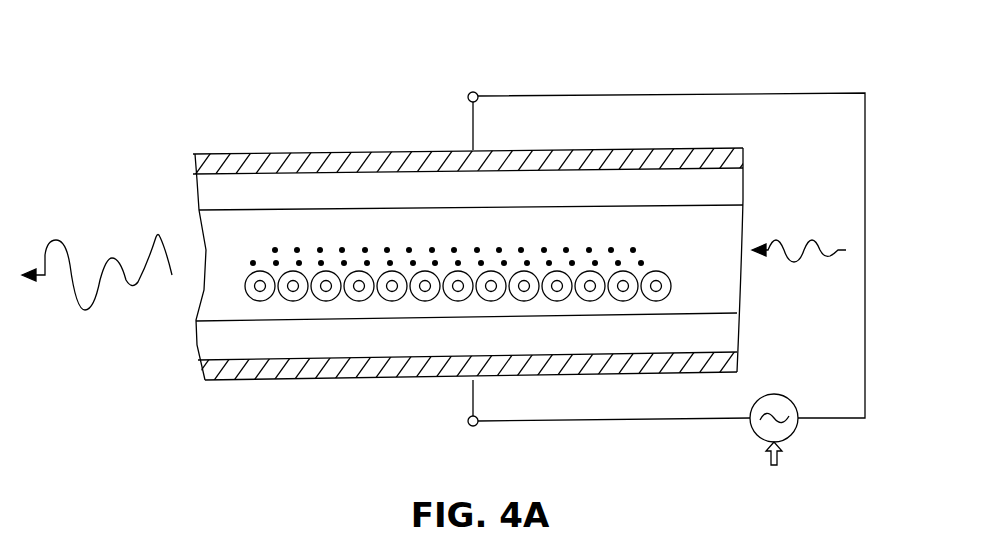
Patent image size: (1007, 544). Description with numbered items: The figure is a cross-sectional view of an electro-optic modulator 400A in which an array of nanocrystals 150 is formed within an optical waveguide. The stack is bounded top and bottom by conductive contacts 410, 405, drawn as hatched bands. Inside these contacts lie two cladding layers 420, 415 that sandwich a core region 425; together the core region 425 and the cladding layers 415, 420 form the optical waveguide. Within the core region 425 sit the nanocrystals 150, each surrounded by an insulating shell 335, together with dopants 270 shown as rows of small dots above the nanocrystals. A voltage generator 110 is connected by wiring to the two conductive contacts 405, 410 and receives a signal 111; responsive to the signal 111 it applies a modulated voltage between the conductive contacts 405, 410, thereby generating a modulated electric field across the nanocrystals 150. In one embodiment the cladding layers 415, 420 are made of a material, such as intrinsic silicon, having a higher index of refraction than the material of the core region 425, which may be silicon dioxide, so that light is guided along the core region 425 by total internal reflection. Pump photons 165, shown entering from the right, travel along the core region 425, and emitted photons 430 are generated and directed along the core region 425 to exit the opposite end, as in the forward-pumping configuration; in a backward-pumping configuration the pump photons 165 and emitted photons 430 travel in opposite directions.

The electro-optic modulator 400A is at (166, 60).
The conductive contact 410 is at (240, 154).
The cladding layer 420 is at (200, 192).
The core region 425 is at (466, 272).
The dopants 270 is at (523, 249).
The insulating shells 335 is at (664, 272).
The nanocrystals 150 is at (662, 291).
The cladding layer 415 is at (197, 336).
The conductive contact 405 is at (205, 368).
The emitted photons 430 is at (58, 238).
The pump photons 165 is at (772, 240).
The voltage generator 110 is at (797, 432).
The signal 111 is at (782, 458).